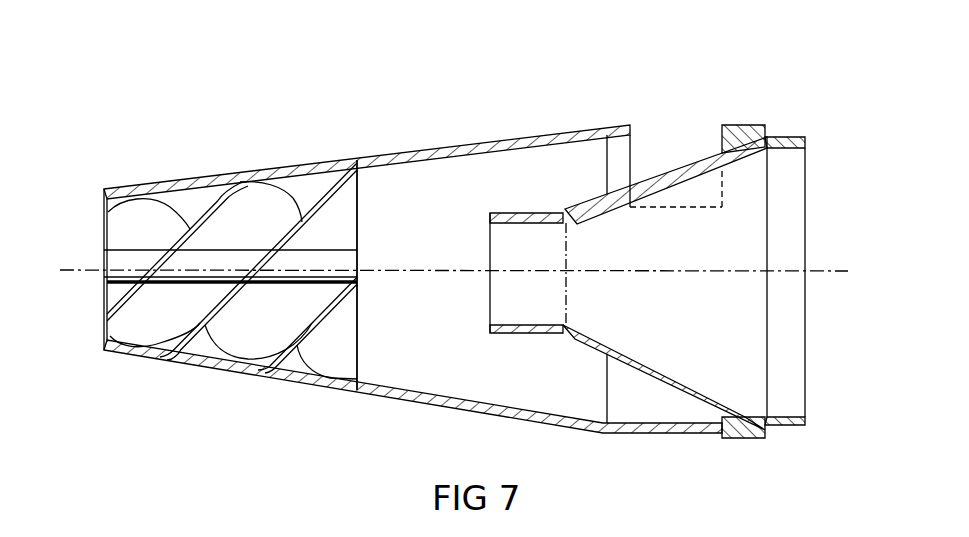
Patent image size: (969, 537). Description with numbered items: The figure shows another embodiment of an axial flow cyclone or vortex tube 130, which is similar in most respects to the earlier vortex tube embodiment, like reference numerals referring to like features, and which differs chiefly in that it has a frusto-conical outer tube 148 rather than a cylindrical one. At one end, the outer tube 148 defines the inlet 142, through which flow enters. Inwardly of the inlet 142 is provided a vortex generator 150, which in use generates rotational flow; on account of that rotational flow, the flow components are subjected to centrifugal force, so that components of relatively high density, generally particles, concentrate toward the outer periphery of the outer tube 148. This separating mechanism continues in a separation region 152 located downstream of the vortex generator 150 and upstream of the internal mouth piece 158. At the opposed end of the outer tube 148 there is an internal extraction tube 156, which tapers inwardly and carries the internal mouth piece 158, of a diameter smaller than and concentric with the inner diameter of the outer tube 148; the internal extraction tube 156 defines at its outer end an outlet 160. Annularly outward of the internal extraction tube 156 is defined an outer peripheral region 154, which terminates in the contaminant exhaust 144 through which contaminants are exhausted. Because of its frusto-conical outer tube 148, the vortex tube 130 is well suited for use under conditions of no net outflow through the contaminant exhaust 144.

The vortex tube 130 is at (541, 72).
The inlet 142 is at (100, 258).
The contaminant exhaust 144 is at (618, 136).
The frusto-conical outer tube 148 is at (357, 160).
The vortex generator 150 is at (215, 188).
The separation region 152 is at (450, 196).
The outer peripheral region 154 is at (510, 184).
The internal extraction tube 156 is at (688, 170).
The internal mouth piece 158 is at (506, 288).
The outlet 160 is at (795, 350).